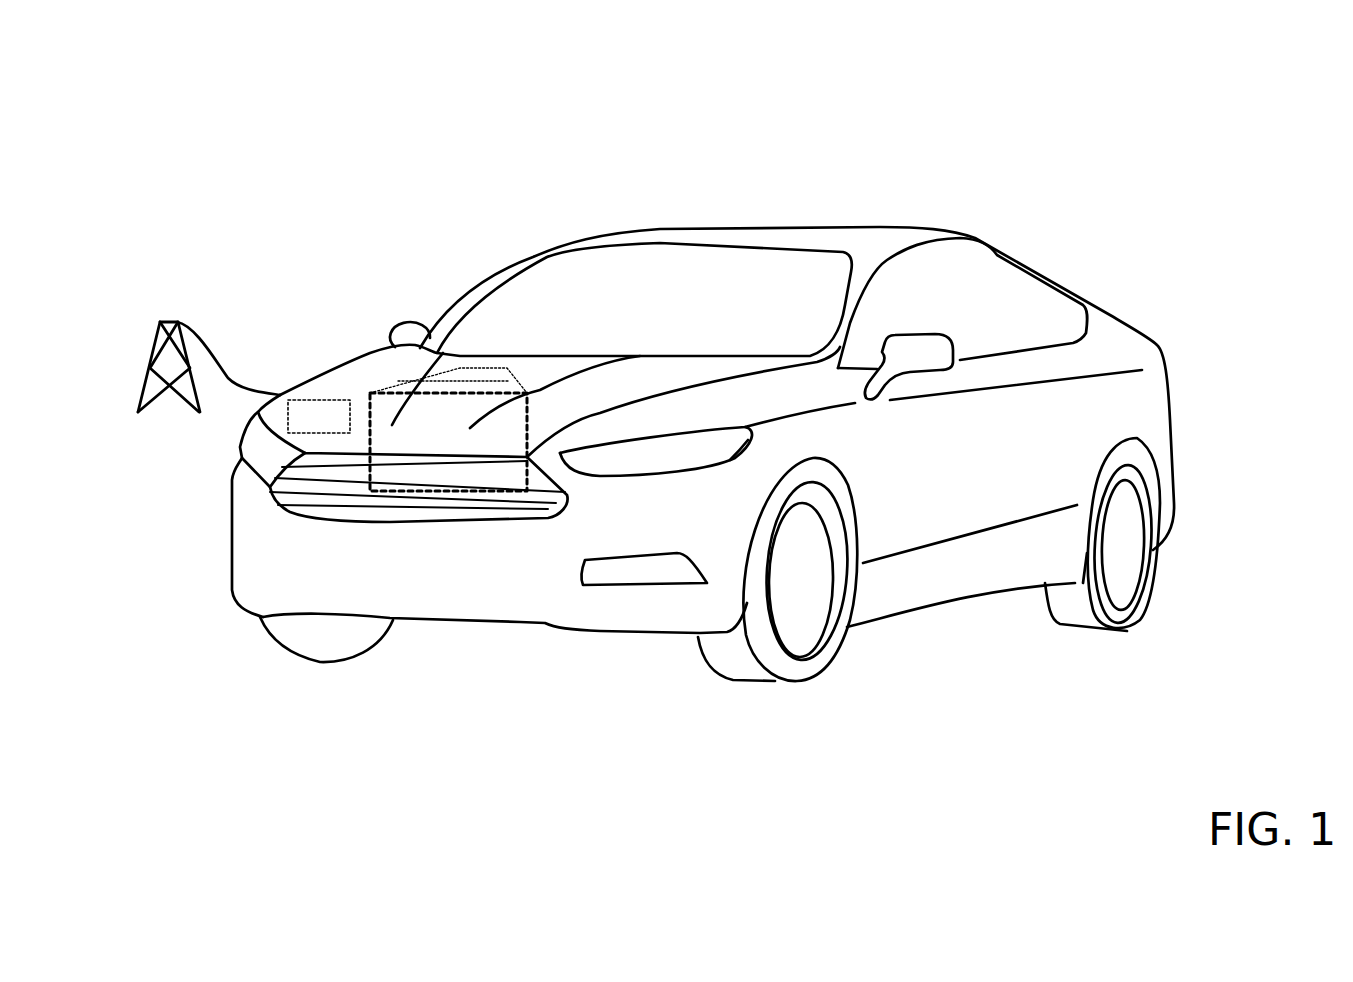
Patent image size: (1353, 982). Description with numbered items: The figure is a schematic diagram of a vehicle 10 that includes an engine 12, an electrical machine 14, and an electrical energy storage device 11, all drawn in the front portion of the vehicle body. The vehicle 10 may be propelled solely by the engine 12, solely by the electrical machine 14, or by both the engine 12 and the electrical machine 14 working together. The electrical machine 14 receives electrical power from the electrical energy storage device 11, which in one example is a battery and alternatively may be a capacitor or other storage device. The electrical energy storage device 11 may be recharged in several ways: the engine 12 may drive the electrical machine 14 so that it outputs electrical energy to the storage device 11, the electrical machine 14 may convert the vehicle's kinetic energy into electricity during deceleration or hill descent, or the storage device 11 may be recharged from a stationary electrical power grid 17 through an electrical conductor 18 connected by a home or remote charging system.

The vehicle 10 is at (158, 106).
The electrical energy storage device 11 is at (331, 430).
The engine 12 is at (461, 453).
The electrical machine 14 is at (507, 369).
The stationary electrical power grid 17 is at (160, 333).
The electrical conductor 18 is at (220, 358).